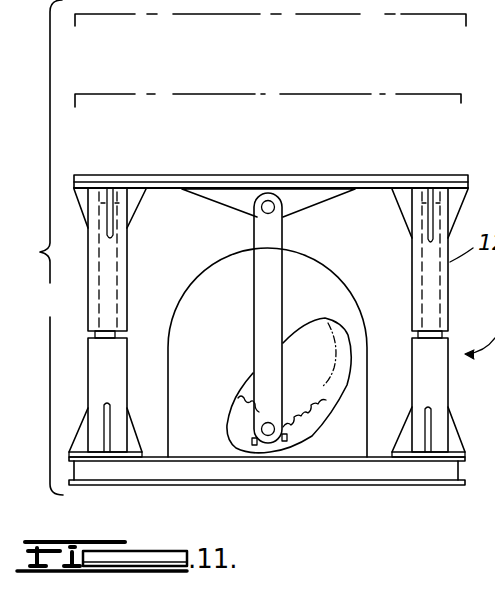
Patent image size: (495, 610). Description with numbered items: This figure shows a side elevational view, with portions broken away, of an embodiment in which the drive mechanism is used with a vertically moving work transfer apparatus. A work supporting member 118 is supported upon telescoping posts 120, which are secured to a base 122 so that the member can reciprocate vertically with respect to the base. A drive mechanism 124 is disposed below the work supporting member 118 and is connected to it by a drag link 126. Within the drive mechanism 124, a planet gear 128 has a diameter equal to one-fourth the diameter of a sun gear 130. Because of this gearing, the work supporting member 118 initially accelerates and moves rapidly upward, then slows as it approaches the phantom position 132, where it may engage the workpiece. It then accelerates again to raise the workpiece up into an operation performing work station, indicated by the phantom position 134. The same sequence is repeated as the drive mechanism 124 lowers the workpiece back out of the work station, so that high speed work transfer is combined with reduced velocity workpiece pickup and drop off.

The work supporting member 118 is at (378, 177).
The telescoping posts 120 is at (88, 291).
The base 122 is at (210, 473).
The drive mechanism 124 is at (193, 279).
The drag link 126 is at (272, 267).
The planet gear 128 is at (240, 447).
The sun gear 130 is at (322, 363).
The phantom position 132 is at (200, 94).
The phantom position 134 is at (262, 14).